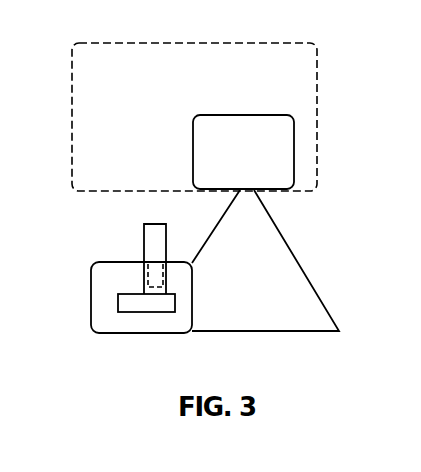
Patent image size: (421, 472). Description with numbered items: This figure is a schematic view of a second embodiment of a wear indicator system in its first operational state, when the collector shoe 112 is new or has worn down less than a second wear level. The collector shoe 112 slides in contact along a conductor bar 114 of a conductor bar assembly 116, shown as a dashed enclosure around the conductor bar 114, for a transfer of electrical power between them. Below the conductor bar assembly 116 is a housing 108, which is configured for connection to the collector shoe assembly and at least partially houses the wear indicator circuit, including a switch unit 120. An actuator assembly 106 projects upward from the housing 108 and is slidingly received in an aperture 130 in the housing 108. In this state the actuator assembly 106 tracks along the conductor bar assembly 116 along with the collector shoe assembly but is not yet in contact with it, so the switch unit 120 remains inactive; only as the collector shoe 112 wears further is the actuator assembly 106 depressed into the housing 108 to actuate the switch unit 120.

The actuator assembly 106 is at (144, 248).
The housing 108 is at (110, 333).
The collector shoe 112 is at (293, 287).
The conductor bar 114 is at (241, 115).
The conductor bar assembly 116 is at (318, 84).
The switch unit 120 is at (140, 312).
The aperture 130 is at (144, 268).